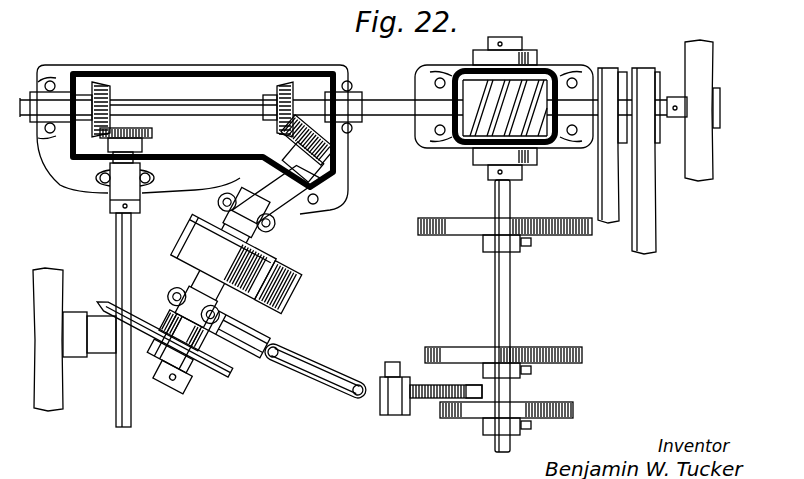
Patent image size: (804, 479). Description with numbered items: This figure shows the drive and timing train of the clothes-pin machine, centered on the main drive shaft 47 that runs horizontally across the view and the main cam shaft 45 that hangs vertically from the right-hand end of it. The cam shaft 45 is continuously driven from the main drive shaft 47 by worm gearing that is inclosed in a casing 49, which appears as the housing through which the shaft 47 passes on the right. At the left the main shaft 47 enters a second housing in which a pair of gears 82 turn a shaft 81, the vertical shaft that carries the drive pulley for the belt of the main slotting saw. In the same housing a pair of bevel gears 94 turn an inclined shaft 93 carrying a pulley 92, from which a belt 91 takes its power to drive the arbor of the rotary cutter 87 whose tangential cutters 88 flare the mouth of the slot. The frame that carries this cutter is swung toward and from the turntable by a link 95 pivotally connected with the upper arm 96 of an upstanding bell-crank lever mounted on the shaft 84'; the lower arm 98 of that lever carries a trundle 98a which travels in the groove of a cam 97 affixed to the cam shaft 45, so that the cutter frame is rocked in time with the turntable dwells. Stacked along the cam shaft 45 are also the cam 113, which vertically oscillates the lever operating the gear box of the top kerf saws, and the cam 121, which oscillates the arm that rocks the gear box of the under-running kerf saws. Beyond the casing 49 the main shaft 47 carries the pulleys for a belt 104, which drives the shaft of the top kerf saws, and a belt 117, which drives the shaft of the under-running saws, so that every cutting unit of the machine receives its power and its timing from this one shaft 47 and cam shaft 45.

The main cam shaft 45 is at (495, 288).
The main drive shaft 47 is at (197, 100).
The casing 49 is at (538, 70).
The shaft 81 is at (115, 233).
The gears 82 is at (127, 128).
The shaft 84' is at (395, 370).
The rotary cutter 87 is at (230, 390).
The tangential cutters 88 is at (238, 381).
The belt 91 is at (303, 292).
The pulley 92 is at (287, 268).
The shaft 93 is at (177, 393).
The bevel gears 94 is at (288, 87).
The link 95 is at (322, 364).
The upper arm 96 is at (382, 393).
The cam 97 is at (468, 409).
The lower arm 98 is at (428, 403).
The trundle 98a is at (463, 395).
The belt 104 is at (602, 181).
The cam 113 is at (448, 228).
The belt 117 is at (647, 221).
The cam 121 is at (582, 354).